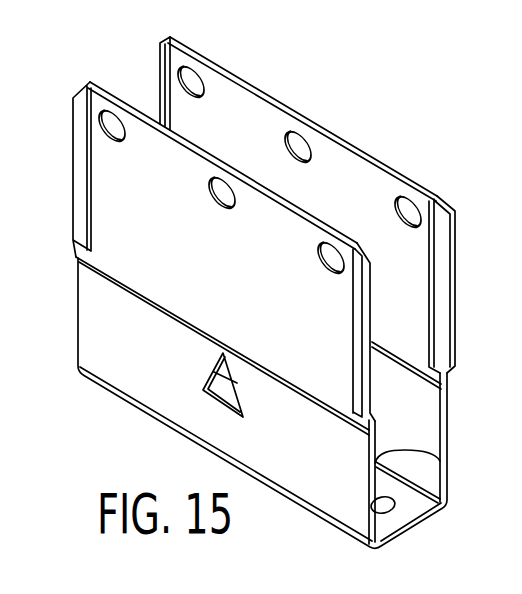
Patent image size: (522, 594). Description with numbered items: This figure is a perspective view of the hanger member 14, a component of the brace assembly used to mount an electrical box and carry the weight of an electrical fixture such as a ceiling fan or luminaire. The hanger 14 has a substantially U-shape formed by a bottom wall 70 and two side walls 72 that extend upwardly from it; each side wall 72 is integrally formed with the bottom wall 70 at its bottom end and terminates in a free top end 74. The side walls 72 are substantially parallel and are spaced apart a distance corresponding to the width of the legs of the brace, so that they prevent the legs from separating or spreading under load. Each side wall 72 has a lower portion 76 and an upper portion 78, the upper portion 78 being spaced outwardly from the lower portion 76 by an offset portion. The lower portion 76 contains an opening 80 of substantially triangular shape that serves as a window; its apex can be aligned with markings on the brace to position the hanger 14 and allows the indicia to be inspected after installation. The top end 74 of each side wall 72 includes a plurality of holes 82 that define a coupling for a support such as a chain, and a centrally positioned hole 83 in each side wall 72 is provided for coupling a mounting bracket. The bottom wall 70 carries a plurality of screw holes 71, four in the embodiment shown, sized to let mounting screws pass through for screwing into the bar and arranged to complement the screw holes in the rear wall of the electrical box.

The hanger member 14 is at (344, 106).
The bottom wall 70 is at (415, 527).
The screw holes 71 is at (385, 495).
The side walls 72 is at (448, 428).
The free top end 74 is at (183, 144).
The lower portion 76 is at (313, 482).
The upper portion 78 is at (140, 137).
The opening 80 is at (204, 402).
The holes 82 is at (109, 112).
The centrally positioned hole 83 is at (302, 136).